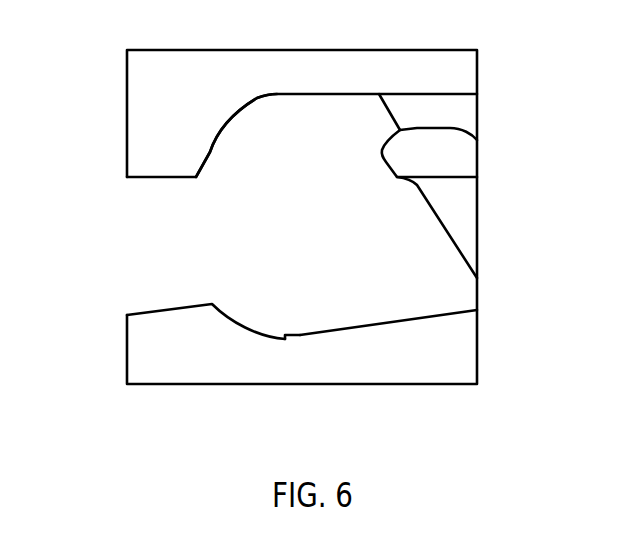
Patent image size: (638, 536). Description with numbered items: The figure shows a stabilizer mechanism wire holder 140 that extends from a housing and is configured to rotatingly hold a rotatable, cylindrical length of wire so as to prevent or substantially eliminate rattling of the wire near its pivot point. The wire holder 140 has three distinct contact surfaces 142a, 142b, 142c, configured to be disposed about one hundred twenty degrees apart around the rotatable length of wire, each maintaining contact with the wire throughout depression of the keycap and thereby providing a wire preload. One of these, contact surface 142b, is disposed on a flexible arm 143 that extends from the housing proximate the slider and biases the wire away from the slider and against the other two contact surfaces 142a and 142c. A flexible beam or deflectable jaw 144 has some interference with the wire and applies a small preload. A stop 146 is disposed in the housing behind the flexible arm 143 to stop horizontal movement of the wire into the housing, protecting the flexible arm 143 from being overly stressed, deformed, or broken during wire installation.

The wire holder 140 is at (358, 365).
The contact surface 142a is at (298, 332).
The contact surface 142b is at (380, 165).
The contact surface 142c is at (203, 166).
The flexible arm 143 is at (443, 155).
The deflectable jaw 144 is at (280, 347).
The stop 146 is at (398, 105).